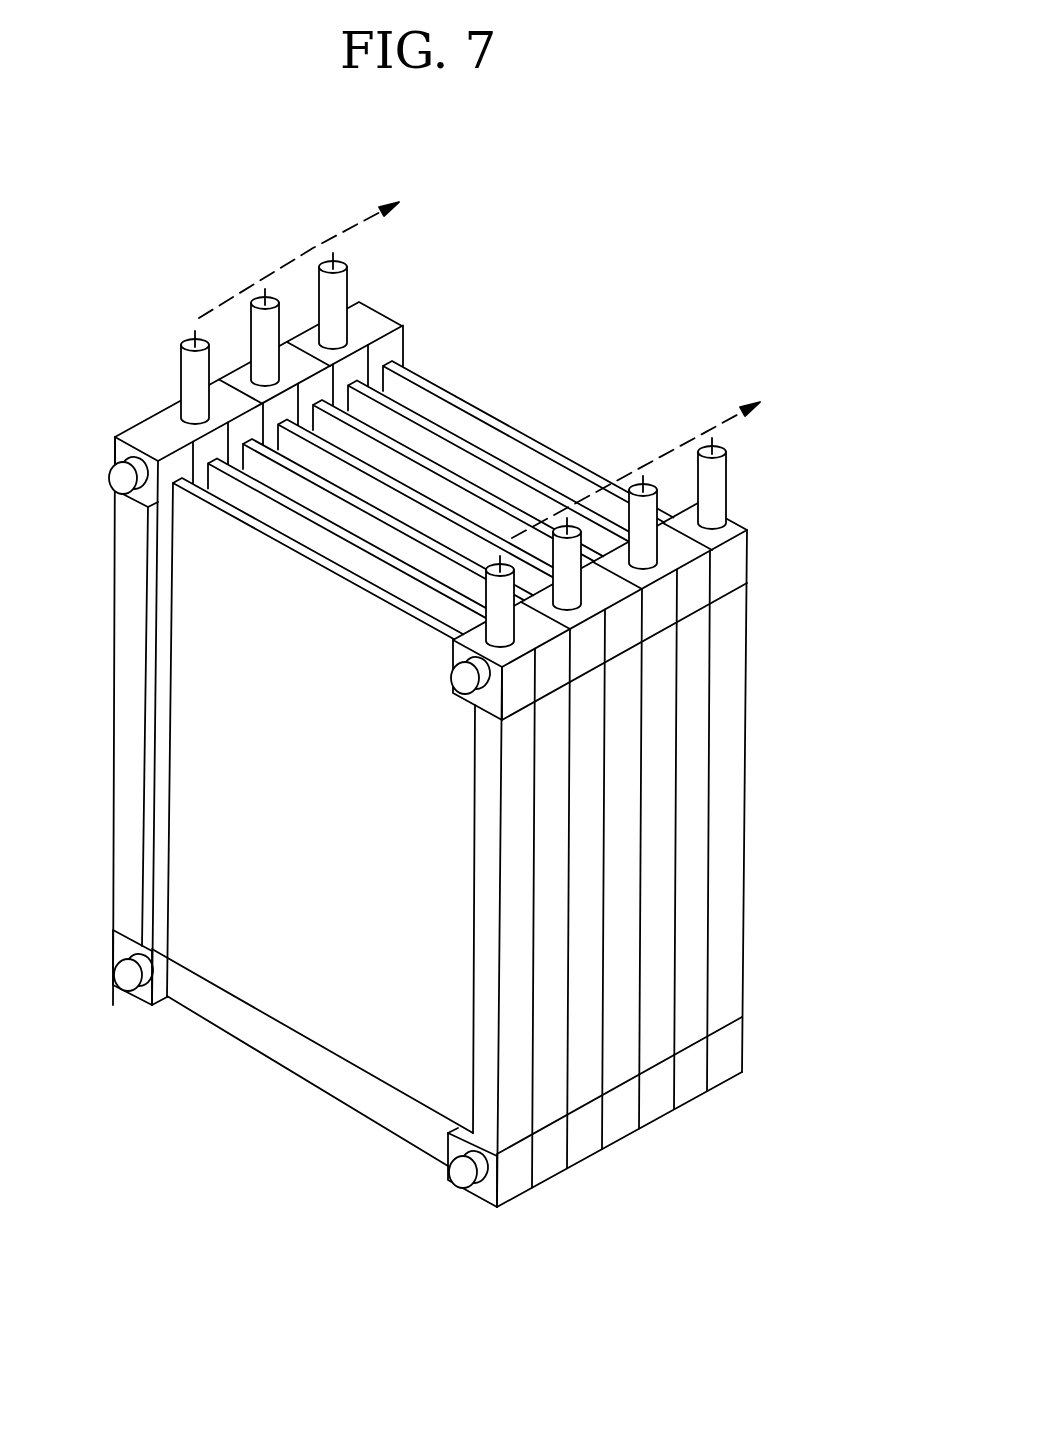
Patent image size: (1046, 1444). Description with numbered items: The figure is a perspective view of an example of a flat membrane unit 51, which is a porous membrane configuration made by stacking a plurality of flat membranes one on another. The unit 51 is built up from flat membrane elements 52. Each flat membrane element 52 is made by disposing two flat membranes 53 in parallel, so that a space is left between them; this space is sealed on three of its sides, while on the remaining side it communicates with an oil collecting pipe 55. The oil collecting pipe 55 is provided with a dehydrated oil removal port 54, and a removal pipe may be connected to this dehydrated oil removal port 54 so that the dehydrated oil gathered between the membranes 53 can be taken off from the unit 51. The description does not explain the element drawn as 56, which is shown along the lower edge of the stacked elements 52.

The flat membrane unit 51 is at (712, 200).
The flat membrane element 52 is at (518, 1197).
The flat membrane 53 is at (188, 797).
The dehydrated oil removal port 54 is at (188, 375).
The oil collecting pipe 55 is at (120, 729).
The tie rod 56 is at (290, 1052).